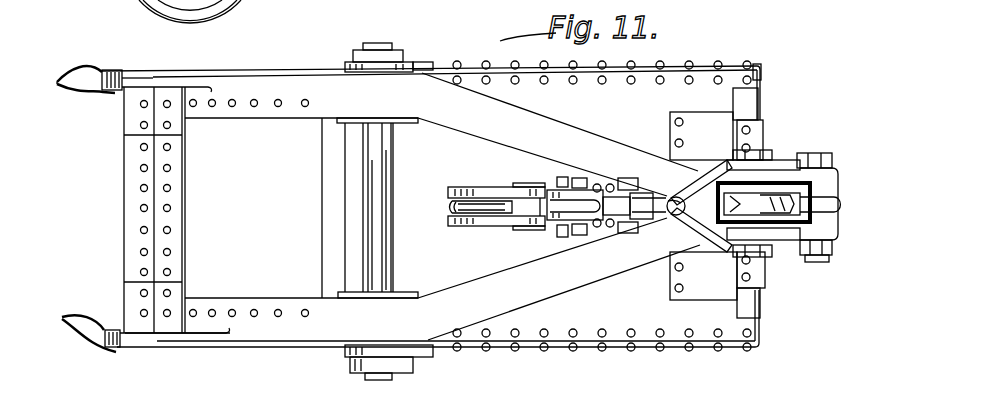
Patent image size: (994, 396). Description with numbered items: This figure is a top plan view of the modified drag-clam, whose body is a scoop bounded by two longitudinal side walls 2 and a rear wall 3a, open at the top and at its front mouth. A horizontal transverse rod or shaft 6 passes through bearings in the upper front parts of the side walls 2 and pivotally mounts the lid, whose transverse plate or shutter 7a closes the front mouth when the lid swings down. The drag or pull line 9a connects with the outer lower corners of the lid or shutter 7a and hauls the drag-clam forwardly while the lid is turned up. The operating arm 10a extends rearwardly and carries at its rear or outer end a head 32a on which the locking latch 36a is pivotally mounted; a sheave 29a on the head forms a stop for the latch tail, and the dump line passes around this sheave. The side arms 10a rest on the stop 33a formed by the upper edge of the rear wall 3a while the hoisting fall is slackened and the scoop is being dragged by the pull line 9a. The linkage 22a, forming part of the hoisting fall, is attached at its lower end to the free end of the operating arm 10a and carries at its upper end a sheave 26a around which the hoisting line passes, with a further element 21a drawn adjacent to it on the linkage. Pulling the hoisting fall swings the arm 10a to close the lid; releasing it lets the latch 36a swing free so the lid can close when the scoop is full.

The longitudinal side walls 2 is at (458, 70).
The rear wall 3a is at (763, 97).
The horizontal transverse rod or shaft 6 is at (384, 152).
The transverse plate or shutter 7a is at (270, 210).
The drag or pull line 9a is at (81, 222).
The operating arm 10a is at (559, 206).
The clevis 21a is at (530, 188).
The linkage 22a is at (672, 215).
The sheave 26a is at (477, 208).
The sheave 29a is at (781, 226).
The head 32a is at (783, 187).
The stop 33a is at (742, 252).
The locking latch 36a is at (838, 177).